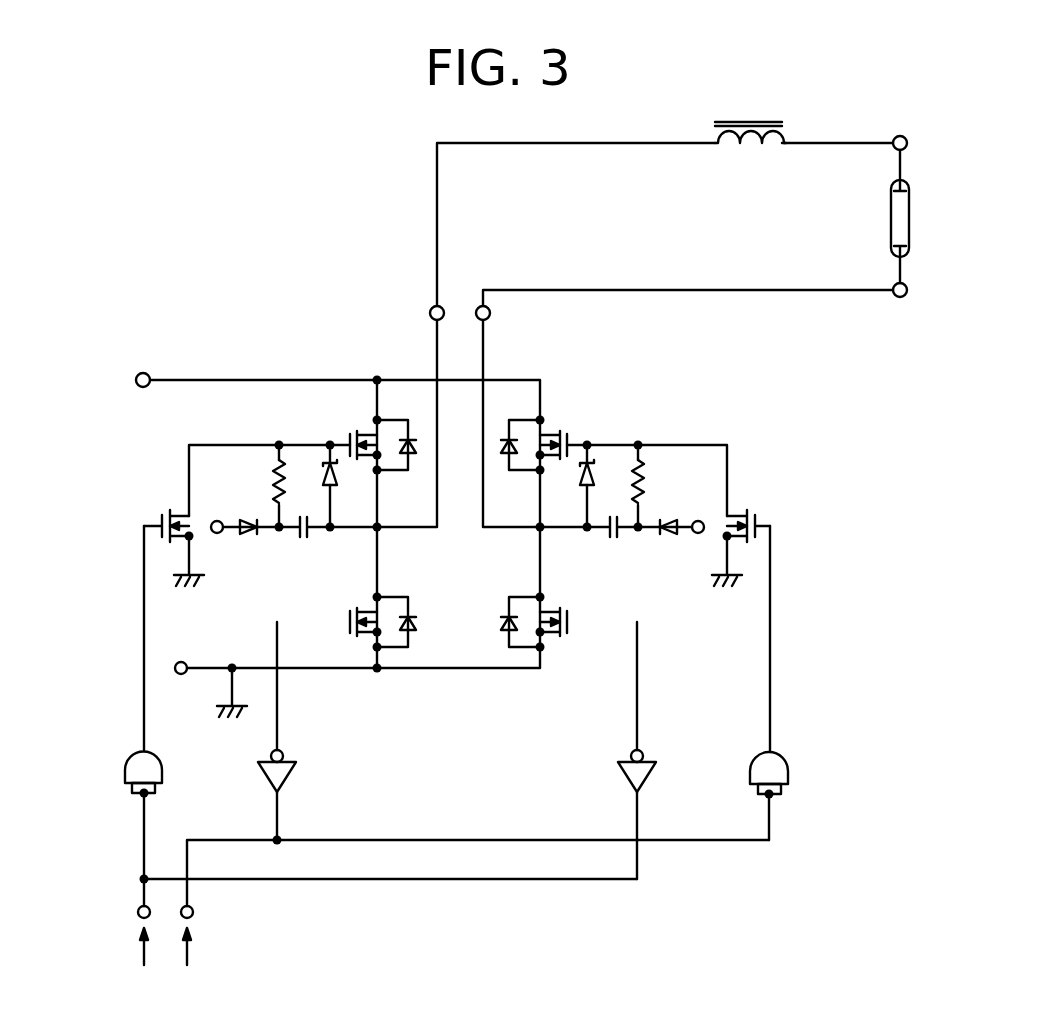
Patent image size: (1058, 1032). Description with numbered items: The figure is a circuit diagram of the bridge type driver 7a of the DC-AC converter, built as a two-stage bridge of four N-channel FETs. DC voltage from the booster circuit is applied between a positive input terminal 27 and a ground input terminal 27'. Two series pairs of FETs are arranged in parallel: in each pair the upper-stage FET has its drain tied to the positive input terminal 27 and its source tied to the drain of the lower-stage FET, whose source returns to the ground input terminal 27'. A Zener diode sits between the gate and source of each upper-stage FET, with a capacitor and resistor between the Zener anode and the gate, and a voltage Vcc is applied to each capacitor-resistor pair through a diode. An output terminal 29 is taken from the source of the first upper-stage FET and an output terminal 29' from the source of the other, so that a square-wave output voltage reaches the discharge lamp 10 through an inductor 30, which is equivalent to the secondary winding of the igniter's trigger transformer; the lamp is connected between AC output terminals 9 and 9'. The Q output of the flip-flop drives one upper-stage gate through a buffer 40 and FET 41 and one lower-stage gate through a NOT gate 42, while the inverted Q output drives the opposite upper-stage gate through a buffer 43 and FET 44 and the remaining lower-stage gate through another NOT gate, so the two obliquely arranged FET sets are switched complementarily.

The bridge type driver 7a is at (306, 208).
The AC output terminal 9 is at (908, 117).
The AC output terminal 9' is at (918, 324).
The discharge lamp 10 is at (890, 212).
The positive input terminal 27 is at (129, 350).
The ground input terminal 27' is at (198, 695).
The output terminal 29 is at (406, 305).
The output terminal 29' is at (527, 327).
The inductor 30 is at (740, 151).
The buffer 40 is at (787, 762).
The FET 41 is at (762, 497).
The NOT gate 42 is at (292, 776).
The buffer 43 is at (128, 756).
The FET 44 is at (155, 497).